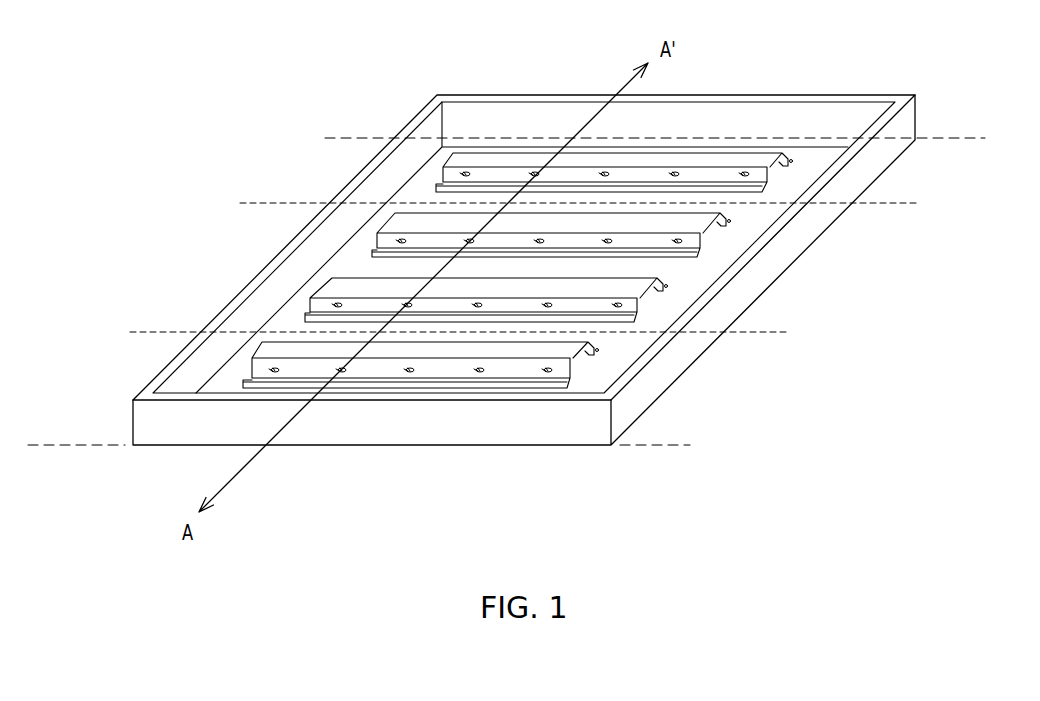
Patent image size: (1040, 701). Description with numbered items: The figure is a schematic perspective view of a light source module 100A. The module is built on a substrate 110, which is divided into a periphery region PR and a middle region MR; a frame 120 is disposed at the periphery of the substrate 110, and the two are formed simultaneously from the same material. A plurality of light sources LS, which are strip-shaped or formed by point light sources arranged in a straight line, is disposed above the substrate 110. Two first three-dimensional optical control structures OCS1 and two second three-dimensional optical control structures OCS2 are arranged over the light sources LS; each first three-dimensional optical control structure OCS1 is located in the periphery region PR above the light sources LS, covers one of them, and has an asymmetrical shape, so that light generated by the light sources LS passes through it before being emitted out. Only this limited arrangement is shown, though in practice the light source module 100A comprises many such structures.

The substrate 110 is at (470, 147).
The frame 120 is at (763, 110).
The first three-dimensional optical control structure OCS1 is at (437, 152).
The second three-dimensional optical control structure OCS2 is at (383, 225).
The light sources LS is at (480, 376).
The periphery region PR is at (506, 292).
The middle region MR is at (828, 267).
The light source module 100A is at (940, 558).